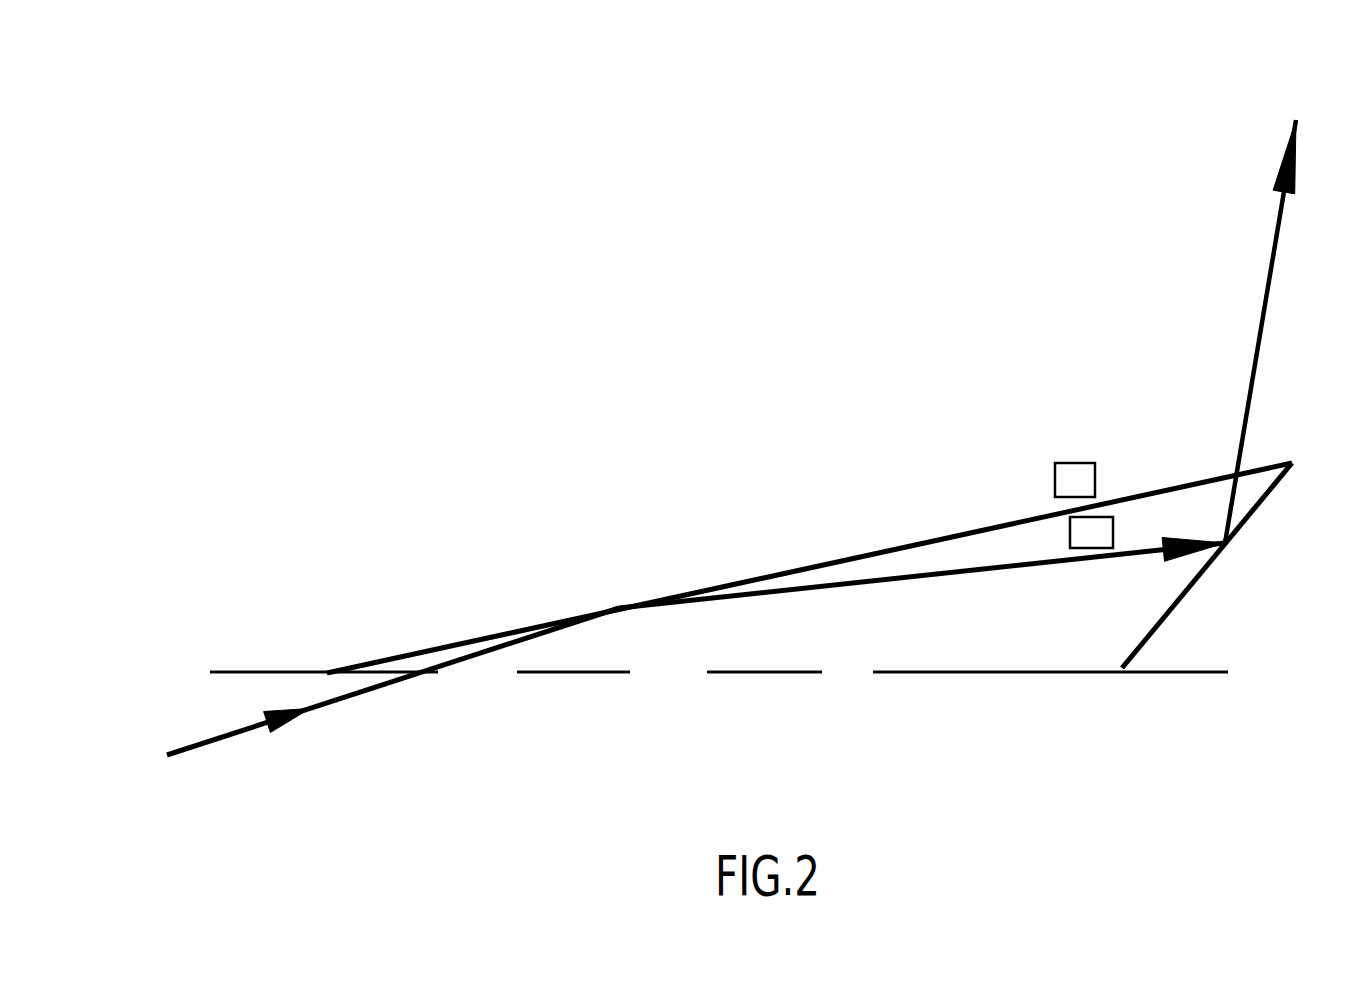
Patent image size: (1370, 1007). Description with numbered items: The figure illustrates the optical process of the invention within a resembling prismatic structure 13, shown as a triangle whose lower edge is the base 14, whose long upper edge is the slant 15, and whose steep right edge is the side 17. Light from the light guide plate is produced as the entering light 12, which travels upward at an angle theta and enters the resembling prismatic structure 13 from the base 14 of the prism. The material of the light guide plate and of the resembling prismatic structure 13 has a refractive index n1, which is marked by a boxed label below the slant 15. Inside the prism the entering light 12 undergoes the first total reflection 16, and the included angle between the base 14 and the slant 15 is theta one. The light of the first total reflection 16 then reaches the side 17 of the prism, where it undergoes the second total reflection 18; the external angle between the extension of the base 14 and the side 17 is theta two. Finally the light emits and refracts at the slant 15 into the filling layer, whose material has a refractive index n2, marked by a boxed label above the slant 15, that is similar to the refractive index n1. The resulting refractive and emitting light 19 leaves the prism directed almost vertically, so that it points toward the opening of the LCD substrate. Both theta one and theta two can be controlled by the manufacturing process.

The entering light 12 is at (337, 700).
The resembling prismatic structure 13 is at (855, 575).
The base 14 is at (1020, 672).
The slant 15 is at (968, 530).
The first total reflection 16 is at (820, 609).
The side 17 is at (1167, 612).
The second total reflection 18 is at (1228, 505).
The refractive and emitting light 19 is at (1257, 328).
The refractive index n1 is at (1091, 533).
The refractive index n2 is at (1075, 480).